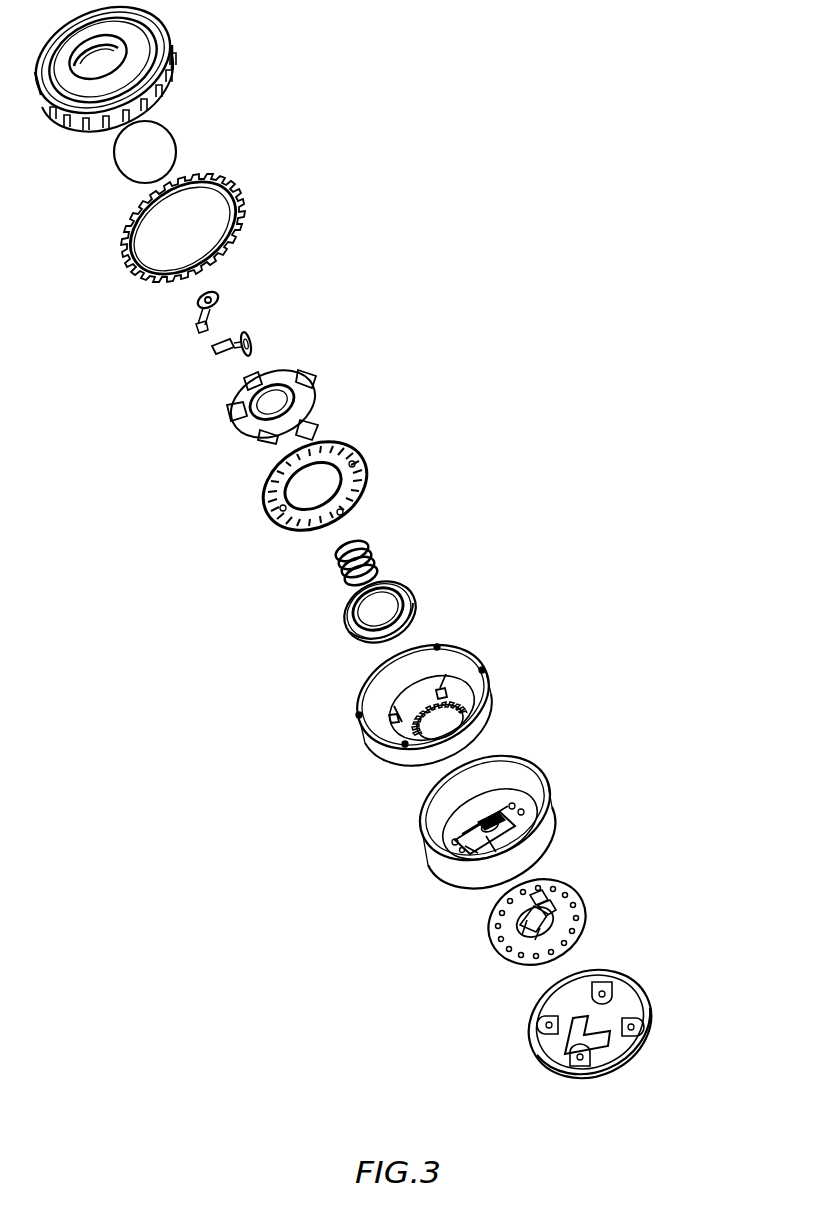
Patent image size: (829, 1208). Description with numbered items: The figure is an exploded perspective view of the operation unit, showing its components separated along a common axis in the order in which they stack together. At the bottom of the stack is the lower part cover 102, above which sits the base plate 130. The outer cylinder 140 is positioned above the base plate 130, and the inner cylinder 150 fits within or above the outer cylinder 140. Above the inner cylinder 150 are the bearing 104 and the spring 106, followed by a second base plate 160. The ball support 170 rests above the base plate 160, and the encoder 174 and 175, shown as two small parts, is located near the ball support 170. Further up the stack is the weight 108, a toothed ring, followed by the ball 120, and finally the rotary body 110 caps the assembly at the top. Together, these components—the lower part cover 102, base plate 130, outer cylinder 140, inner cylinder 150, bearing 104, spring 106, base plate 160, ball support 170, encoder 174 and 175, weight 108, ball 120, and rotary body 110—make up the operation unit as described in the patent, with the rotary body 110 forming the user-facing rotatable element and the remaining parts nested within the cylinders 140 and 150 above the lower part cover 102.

The lower part cover 102 is at (665, 1040).
The bearing 104 is at (414, 618).
The spring 106 is at (368, 546).
The weight 108 is at (244, 196).
The rotary body 110 is at (176, 46).
The ball 120 is at (166, 143).
The base plate 130 is at (582, 898).
The outer cylinder 140 is at (545, 829).
The inner cylinder 150 is at (484, 717).
The base plate 160 is at (362, 456).
The ball support 170 is at (318, 383).
The encoder 174 is at (250, 334).
The encoder 175 is at (214, 297).